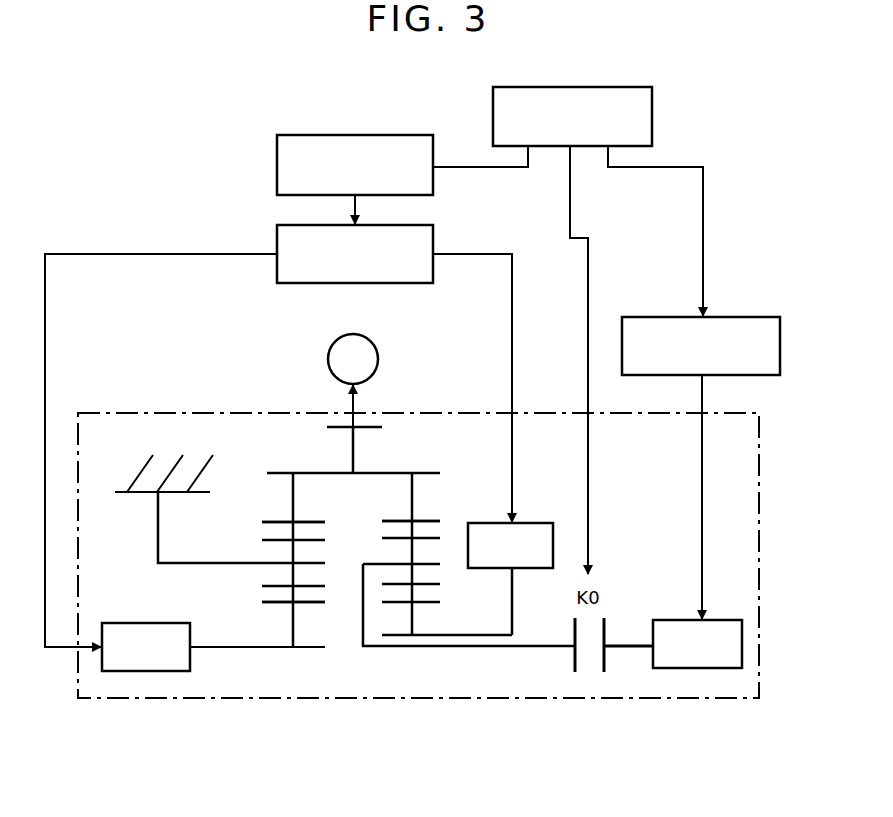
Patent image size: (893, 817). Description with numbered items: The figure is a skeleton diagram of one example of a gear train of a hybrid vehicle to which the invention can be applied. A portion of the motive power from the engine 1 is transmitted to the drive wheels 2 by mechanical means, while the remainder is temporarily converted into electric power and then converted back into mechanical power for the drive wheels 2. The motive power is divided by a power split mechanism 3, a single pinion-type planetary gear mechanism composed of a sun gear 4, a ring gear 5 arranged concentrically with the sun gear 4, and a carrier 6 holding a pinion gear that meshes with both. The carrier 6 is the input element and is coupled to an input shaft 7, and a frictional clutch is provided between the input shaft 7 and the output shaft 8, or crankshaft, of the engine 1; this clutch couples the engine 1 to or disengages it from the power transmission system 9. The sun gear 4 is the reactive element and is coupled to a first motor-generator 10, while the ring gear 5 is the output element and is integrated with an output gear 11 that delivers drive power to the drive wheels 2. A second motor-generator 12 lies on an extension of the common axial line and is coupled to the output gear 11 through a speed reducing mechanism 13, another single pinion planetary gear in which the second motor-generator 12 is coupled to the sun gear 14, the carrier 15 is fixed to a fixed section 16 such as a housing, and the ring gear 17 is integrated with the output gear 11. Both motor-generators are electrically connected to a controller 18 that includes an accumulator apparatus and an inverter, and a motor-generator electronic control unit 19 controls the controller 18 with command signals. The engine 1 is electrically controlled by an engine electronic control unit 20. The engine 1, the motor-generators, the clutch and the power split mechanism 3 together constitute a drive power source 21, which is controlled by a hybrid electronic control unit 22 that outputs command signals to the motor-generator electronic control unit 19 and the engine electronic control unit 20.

The engine 1 is at (726, 620).
The drive wheels 2 is at (379, 359).
The power split mechanism 3 is at (458, 498).
The sun gear 4 is at (428, 605).
The ring gear 5 is at (396, 521).
The carrier 6 is at (363, 564).
The input shaft 7 is at (536, 646).
The output shaft 8 is at (632, 646).
The power transmission system 9 is at (298, 668).
The first motor-generator 10 is at (544, 523).
The output gear 11 is at (366, 430).
The second motor-generator 12 is at (159, 623).
The speed reducing mechanism 13 is at (259, 616).
The sun gear 14 is at (306, 604).
The carrier 15 is at (191, 563).
The fixed section 16 is at (154, 468).
The ring gear 17 is at (276, 521).
The controller 18 is at (436, 242).
The motor-generator electronic control unit 19 is at (406, 135).
The engine electronic control unit 20 is at (744, 316).
The drive power source 21 is at (760, 468).
The hybrid electronic control unit 22 is at (655, 113).